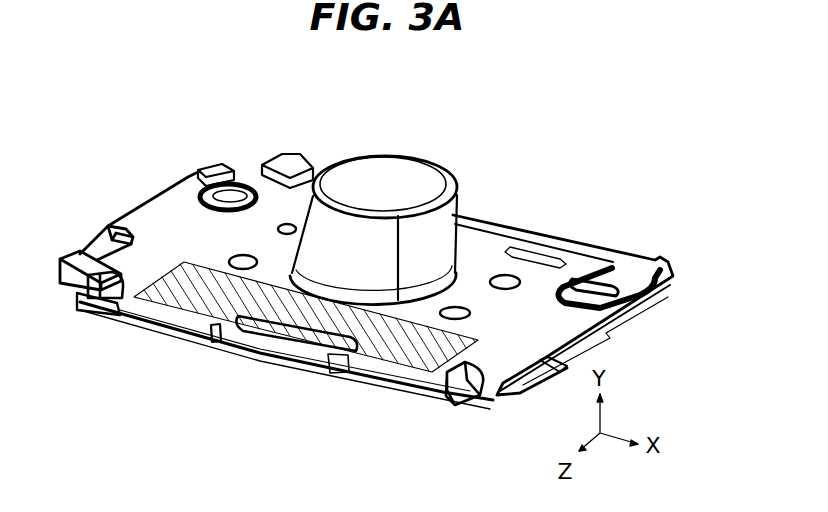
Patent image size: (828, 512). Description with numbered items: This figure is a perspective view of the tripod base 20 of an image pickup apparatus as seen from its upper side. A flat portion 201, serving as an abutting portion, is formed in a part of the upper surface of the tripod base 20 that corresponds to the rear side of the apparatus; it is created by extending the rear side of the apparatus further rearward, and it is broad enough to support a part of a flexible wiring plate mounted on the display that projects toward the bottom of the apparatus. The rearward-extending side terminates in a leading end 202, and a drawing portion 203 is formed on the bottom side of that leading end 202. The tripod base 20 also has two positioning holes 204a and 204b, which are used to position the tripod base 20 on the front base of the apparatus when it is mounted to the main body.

The tripod base 20 is at (602, 235).
The flat portion 201 is at (195, 268).
The leading end 202 is at (443, 393).
The drawing portion 203 is at (290, 358).
The positioning hole 204a is at (232, 196).
The positioning hole 204b is at (603, 290).